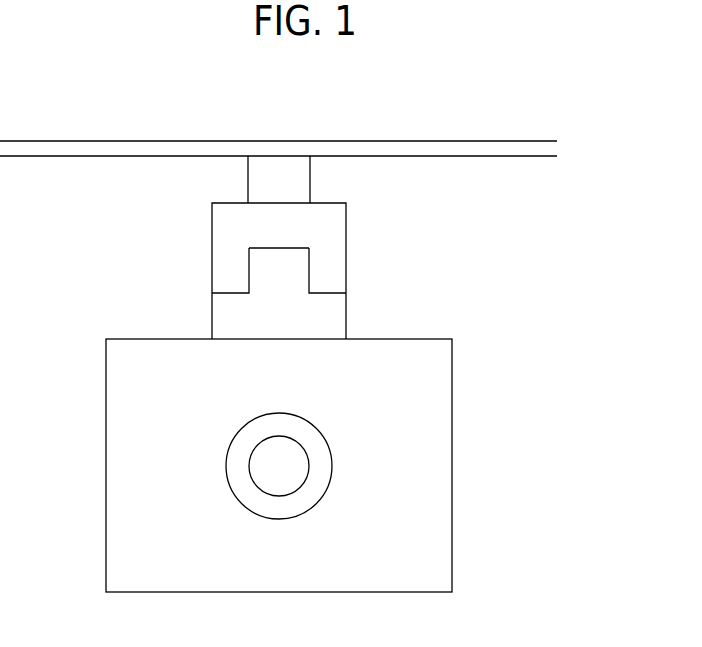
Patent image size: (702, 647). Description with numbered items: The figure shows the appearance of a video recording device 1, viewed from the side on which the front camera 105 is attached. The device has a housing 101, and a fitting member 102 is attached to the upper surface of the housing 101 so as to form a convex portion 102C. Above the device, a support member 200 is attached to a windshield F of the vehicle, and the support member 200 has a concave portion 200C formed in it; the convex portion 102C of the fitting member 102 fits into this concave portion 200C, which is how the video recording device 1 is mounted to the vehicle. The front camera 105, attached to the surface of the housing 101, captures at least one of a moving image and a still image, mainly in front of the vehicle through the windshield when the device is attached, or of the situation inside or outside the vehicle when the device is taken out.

The windshield F is at (77, 149).
The support member 200 is at (230, 240).
The concave portion 200C is at (250, 278).
The video recording device 1 is at (362, 420).
The fitting member 102 is at (328, 321).
The convex portion 102C is at (297, 273).
The housing 101 is at (435, 397).
The front camera 105 is at (325, 463).